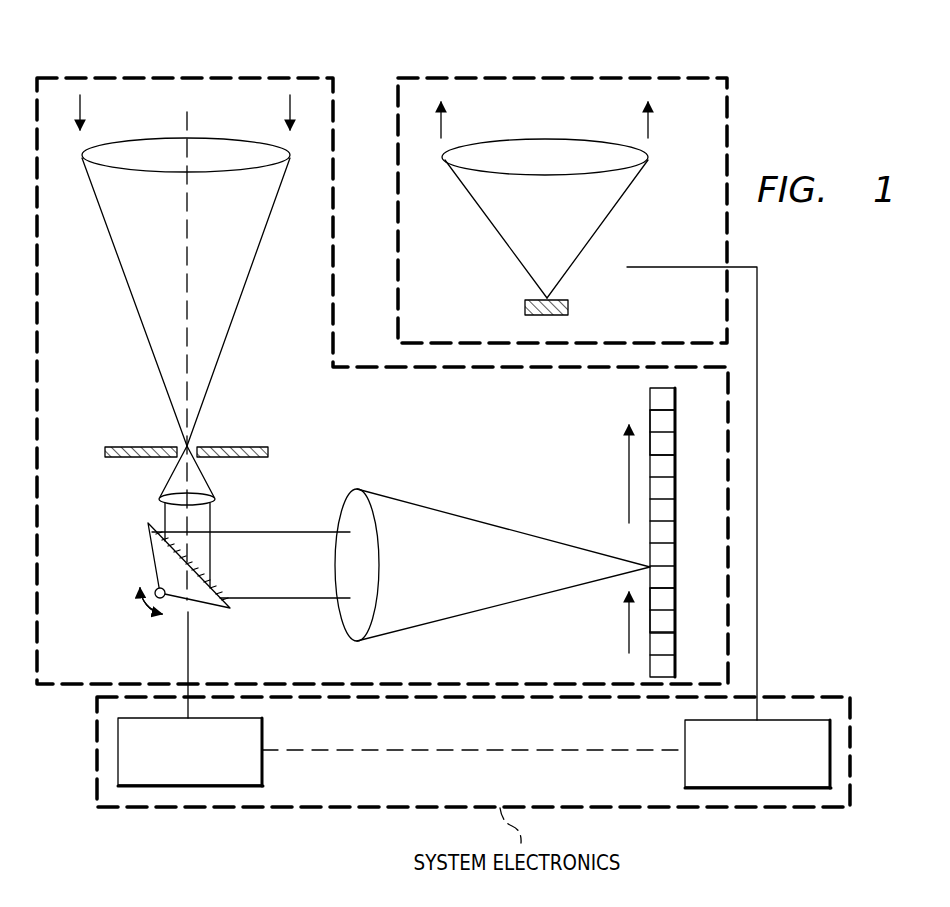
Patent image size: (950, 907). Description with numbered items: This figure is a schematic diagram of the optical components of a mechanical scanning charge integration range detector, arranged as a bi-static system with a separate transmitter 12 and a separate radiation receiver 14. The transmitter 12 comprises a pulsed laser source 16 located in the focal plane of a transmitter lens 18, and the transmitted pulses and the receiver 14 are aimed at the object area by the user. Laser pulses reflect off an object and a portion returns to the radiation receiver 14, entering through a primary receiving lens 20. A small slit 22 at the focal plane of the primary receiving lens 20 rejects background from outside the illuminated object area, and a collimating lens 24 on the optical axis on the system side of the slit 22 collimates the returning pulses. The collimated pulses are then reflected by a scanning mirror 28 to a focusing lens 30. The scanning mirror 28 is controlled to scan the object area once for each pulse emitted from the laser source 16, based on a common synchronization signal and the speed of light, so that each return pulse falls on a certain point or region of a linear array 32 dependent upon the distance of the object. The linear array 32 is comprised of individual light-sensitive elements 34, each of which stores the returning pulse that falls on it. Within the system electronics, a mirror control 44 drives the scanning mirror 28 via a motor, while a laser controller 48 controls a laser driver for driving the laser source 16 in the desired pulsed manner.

The transmitter 12 is at (620, 78).
The radiation receiver 14 is at (262, 78).
The pulsed laser source 16 is at (568, 307).
The transmitter lens 18 is at (592, 148).
The primary receiving lens 20 is at (140, 142).
The slit 22 is at (238, 446).
The collimating lens 24 is at (213, 497).
The scanning mirror 28 is at (152, 553).
The focusing lens 30 is at (350, 628).
The linear array 32 is at (648, 397).
The light-sensitive element 34 is at (665, 423).
The mirror control 44 is at (264, 765).
The laser controller 48 is at (685, 740).